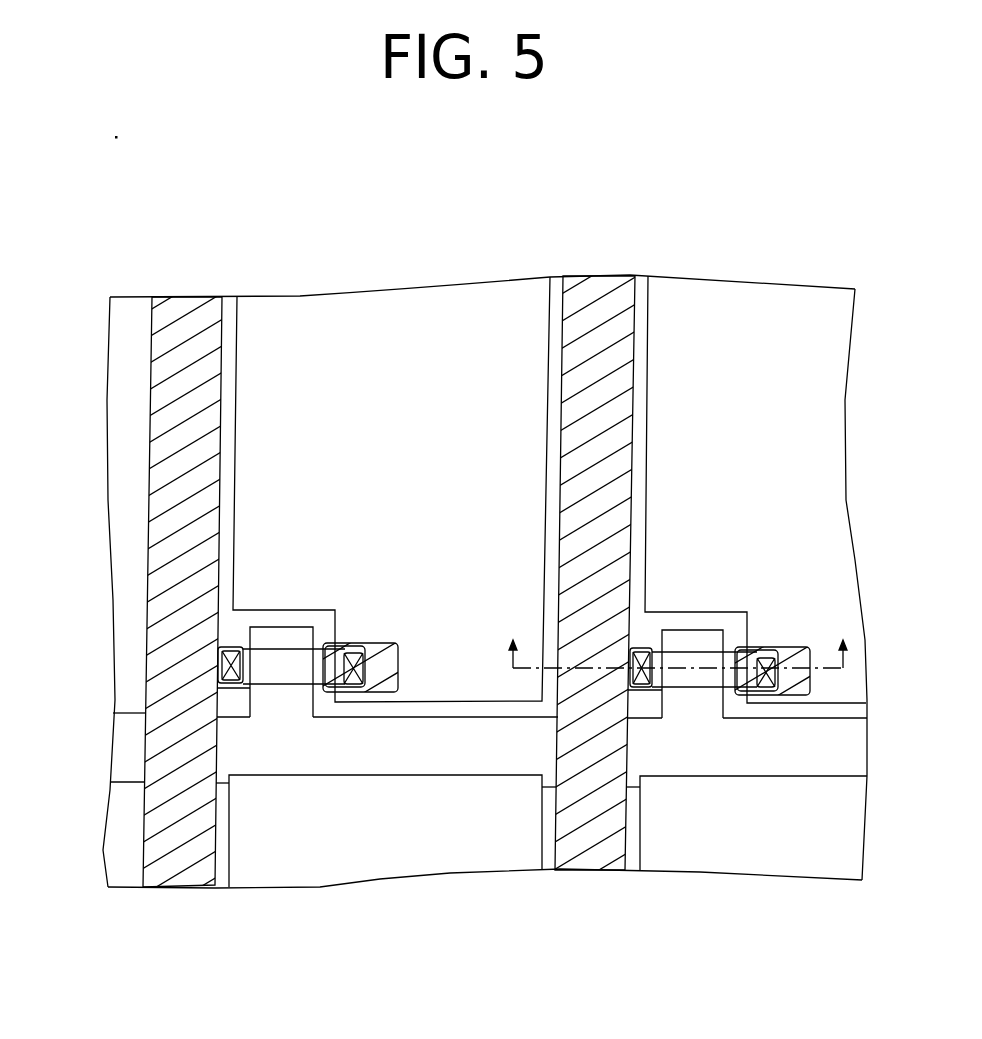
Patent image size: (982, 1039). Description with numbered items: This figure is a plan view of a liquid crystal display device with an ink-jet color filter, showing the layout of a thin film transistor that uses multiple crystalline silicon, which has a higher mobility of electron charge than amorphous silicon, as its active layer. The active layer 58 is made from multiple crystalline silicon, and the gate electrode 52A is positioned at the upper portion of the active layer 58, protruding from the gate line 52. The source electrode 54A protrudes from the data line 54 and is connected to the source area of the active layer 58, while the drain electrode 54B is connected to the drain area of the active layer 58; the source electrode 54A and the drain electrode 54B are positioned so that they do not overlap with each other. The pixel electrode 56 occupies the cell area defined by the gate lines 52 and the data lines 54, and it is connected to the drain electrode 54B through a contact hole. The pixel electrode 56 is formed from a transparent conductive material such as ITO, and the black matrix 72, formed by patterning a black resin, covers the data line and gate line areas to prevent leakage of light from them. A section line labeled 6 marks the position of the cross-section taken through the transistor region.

The gate line 52 is at (428, 757).
The gate electrode 52A is at (263, 705).
The data line 54 is at (150, 572).
The source electrode 54A is at (218, 662).
The drain electrode 54B is at (399, 650).
The pixel electrode 56 is at (245, 487).
The active layer 58 is at (299, 668).
The black matrix 72 is at (212, 562).
The section line 6- 6 is at (678, 637).